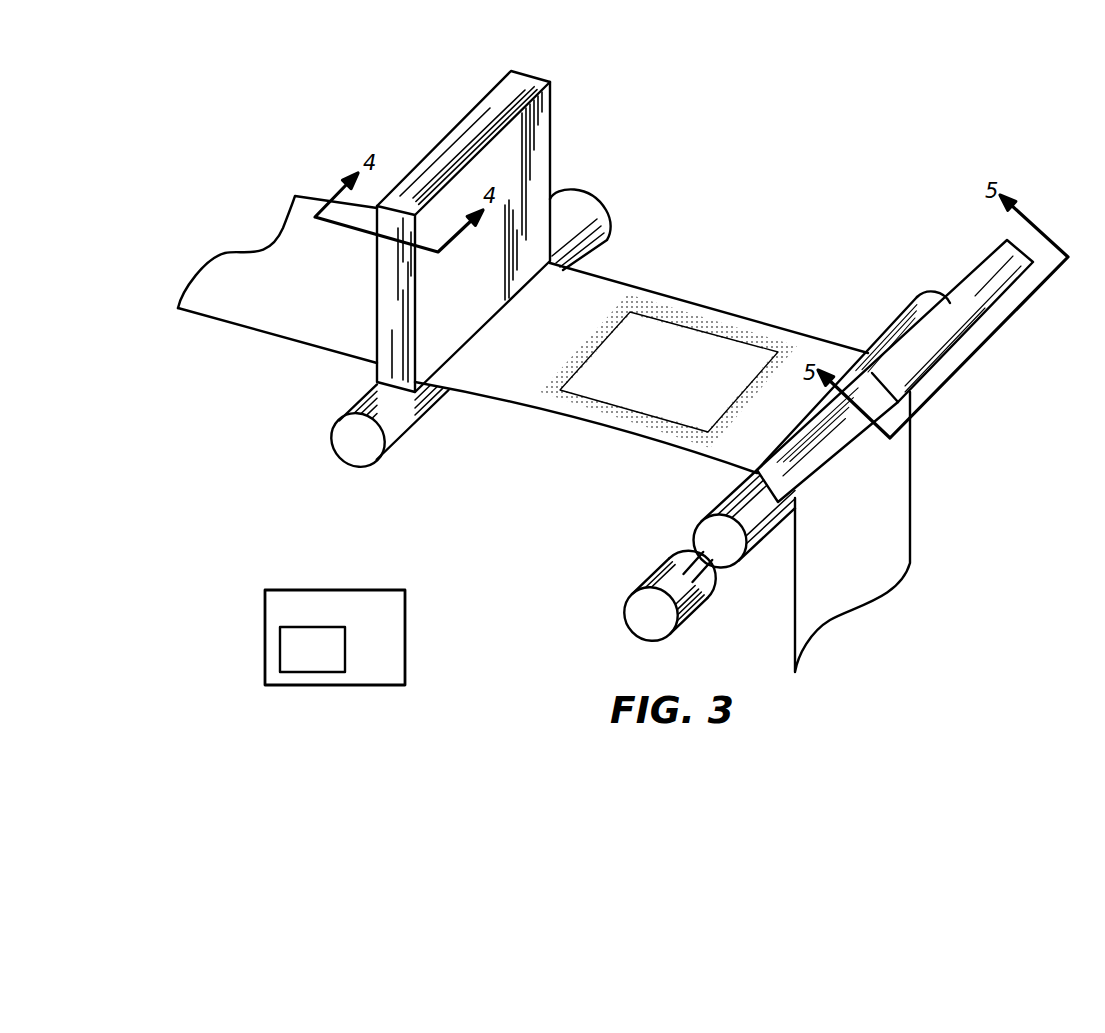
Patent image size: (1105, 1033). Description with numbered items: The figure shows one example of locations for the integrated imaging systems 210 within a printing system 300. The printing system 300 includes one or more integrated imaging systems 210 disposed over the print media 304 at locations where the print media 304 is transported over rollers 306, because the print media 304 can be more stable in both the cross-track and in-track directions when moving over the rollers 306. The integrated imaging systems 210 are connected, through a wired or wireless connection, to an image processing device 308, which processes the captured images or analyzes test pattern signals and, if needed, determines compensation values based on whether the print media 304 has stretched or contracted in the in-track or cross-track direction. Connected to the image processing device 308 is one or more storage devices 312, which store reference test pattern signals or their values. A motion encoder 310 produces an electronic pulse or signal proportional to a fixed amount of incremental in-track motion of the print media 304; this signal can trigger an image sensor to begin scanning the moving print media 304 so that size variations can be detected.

The integrated imaging system 210 is at (513, 71).
The printing system 300 is at (779, 122).
The print media 304 is at (710, 308).
The rollers 306 is at (337, 450).
The image processing device 308 is at (325, 592).
The motion encoder 310 is at (625, 594).
The storage device 312 is at (292, 659).